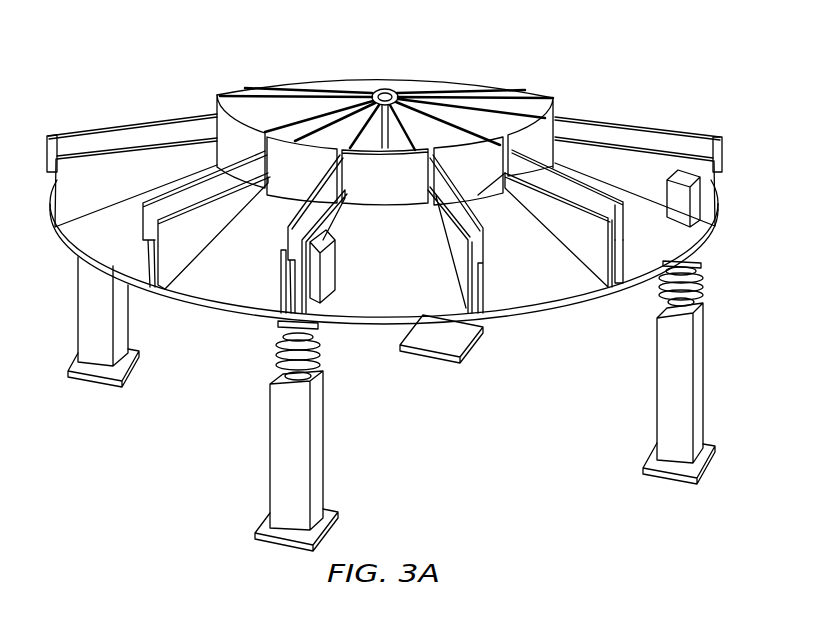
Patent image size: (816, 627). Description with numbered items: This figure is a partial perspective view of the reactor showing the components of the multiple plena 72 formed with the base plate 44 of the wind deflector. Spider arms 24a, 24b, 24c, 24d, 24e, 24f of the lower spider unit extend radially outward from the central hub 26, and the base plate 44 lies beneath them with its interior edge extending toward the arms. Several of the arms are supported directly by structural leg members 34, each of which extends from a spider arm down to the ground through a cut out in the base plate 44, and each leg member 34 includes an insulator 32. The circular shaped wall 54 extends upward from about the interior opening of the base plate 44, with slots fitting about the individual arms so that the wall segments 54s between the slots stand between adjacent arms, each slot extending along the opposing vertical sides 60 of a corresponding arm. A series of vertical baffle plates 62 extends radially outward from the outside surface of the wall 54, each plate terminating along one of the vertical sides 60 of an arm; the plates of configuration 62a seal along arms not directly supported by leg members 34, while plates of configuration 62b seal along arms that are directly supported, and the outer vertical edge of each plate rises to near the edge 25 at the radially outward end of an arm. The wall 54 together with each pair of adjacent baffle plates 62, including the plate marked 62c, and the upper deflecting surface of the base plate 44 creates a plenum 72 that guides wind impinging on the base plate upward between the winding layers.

The spider arm 24a is at (672, 128).
The spider arm 24b is at (574, 172).
The spider arm 24c is at (468, 177).
The spider arm 24d is at (322, 197).
The spider arm 24e is at (200, 173).
The spider arm 24f is at (100, 128).
The edge of spider arm 25 is at (47, 157).
The central hub 26 is at (388, 90).
The insulator 32 is at (276, 350).
The structural leg member 34 is at (78, 312).
The base plate 44 is at (726, 255).
The circular shaped wall 54 is at (372, 172).
The wall segment 54s is at (471, 120).
The vertical side of arm 60 is at (310, 118).
The vertical baffle plate 62 is at (143, 167).
The baffle plate 62a is at (623, 263).
The baffle plate 62b is at (631, 163).
The baffle panel 62c is at (565, 218).
The plenum 72 is at (258, 265).